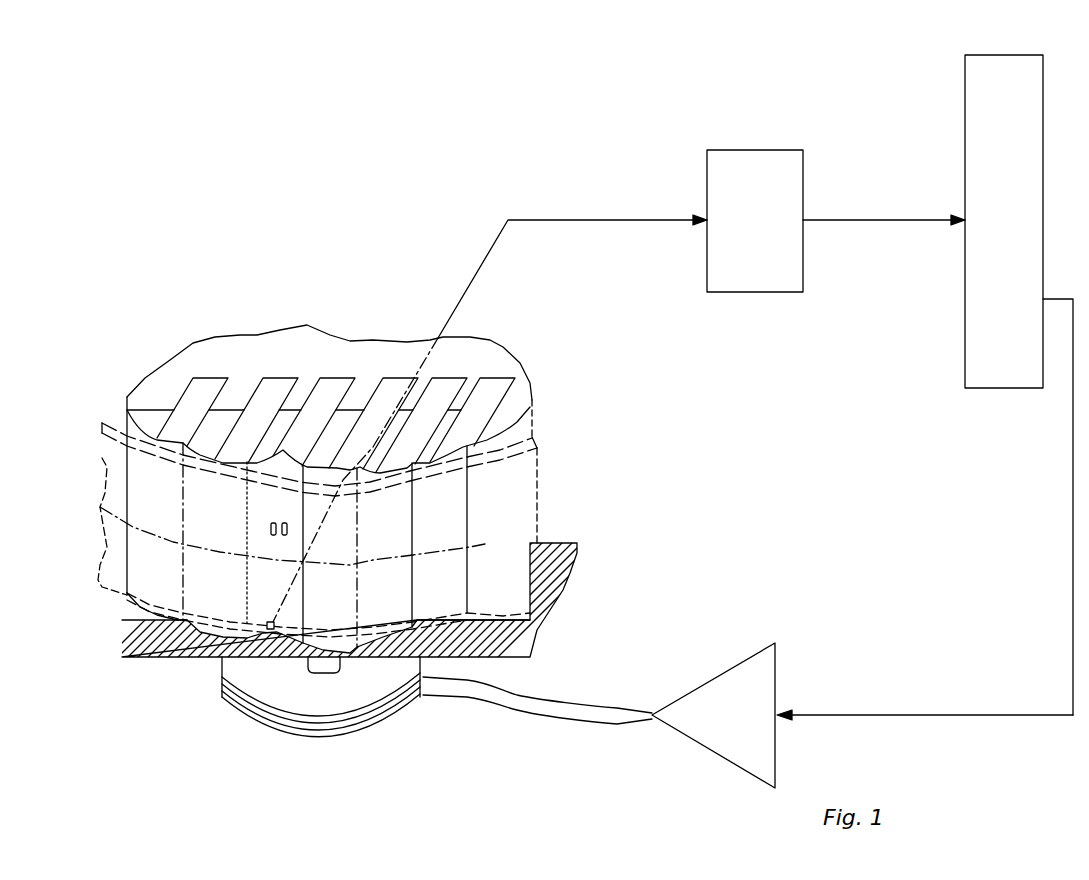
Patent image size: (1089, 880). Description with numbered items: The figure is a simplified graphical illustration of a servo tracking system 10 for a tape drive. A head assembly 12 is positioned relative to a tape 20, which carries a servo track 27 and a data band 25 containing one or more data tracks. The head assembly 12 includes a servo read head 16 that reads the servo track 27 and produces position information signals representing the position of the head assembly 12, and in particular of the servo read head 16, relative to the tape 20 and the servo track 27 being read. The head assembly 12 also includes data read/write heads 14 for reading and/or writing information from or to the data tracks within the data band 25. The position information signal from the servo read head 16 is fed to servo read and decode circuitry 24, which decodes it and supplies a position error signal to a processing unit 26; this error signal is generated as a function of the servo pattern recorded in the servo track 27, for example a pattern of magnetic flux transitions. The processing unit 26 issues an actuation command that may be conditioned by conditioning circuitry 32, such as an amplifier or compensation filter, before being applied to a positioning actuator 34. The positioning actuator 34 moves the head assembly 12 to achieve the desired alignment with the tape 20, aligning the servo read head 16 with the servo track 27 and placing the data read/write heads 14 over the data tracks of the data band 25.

The servo tracking system 10 is at (540, 180).
The head assembly 12 is at (350, 323).
The data read/write heads 14 is at (292, 501).
The servo read head 16 is at (227, 658).
The tape 20 is at (500, 572).
The servo read and decode circuitry 24 is at (728, 150).
The data band 25 is at (102, 457).
The processing unit 26 is at (985, 55).
The servo track 27 is at (93, 508).
The conditioning circuitry 32 is at (735, 665).
The positioning actuator 34 is at (253, 720).